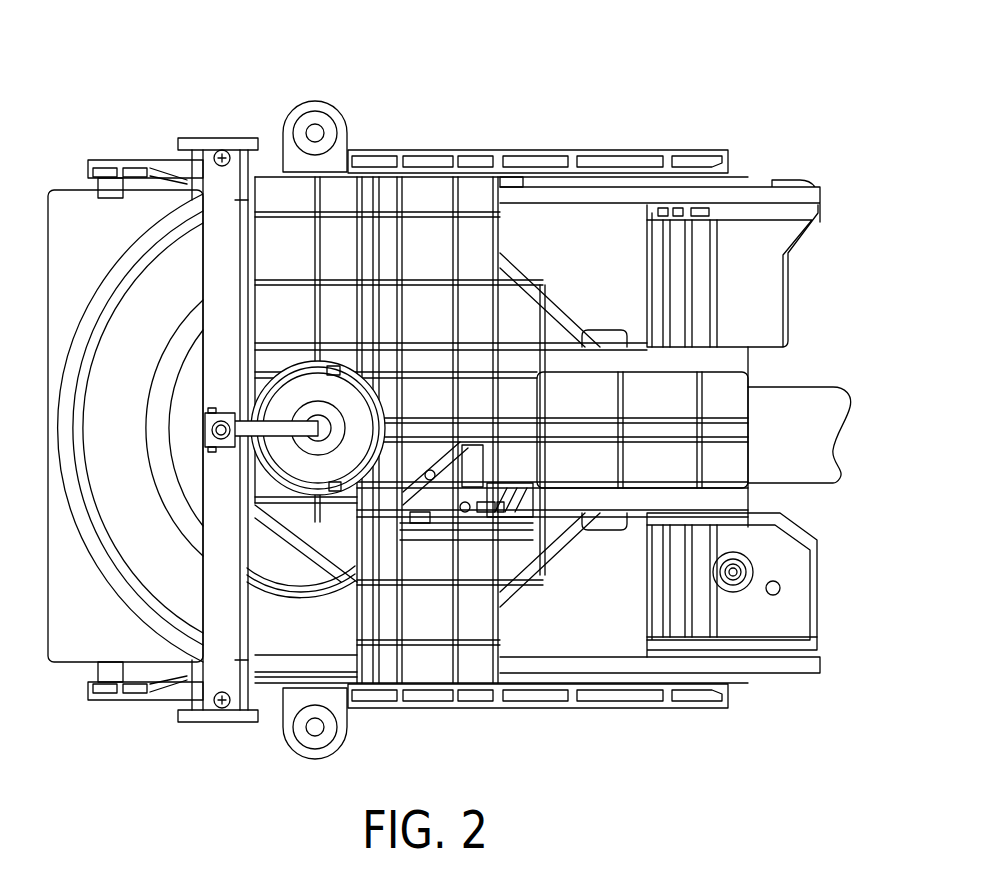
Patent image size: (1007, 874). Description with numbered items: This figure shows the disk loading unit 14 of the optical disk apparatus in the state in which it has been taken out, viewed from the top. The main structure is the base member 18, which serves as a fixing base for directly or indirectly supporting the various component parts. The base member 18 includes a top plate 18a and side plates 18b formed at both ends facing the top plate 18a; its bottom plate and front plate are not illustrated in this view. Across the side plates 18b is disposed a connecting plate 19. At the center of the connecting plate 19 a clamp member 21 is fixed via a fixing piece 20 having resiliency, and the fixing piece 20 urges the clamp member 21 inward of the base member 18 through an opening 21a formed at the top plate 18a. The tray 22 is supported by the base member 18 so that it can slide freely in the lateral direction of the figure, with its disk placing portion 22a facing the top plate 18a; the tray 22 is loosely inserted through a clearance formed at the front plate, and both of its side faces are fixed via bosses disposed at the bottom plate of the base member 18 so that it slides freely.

The disk loading unit 14 is at (565, 90).
The base member 18 is at (537, 285).
The top plate 18a is at (432, 228).
The side plate 18b is at (612, 160).
The connecting plate 19 is at (205, 148).
The fixing piece 20 is at (250, 432).
The clamp member 21 is at (278, 412).
The opening 21a is at (270, 377).
The tray 22 is at (63, 660).
The disk placing portion 22a is at (150, 290).